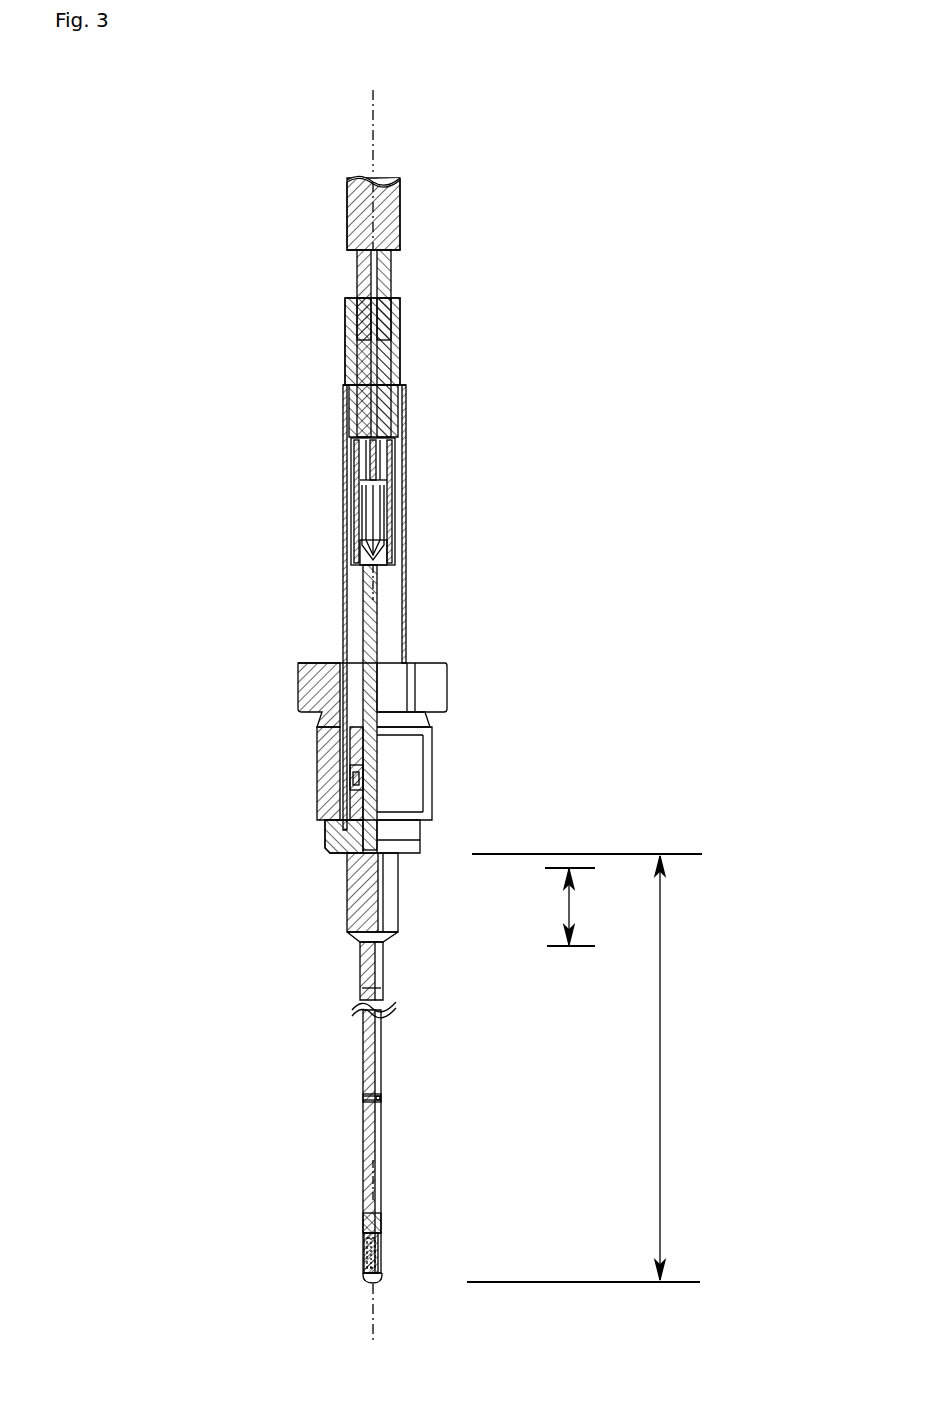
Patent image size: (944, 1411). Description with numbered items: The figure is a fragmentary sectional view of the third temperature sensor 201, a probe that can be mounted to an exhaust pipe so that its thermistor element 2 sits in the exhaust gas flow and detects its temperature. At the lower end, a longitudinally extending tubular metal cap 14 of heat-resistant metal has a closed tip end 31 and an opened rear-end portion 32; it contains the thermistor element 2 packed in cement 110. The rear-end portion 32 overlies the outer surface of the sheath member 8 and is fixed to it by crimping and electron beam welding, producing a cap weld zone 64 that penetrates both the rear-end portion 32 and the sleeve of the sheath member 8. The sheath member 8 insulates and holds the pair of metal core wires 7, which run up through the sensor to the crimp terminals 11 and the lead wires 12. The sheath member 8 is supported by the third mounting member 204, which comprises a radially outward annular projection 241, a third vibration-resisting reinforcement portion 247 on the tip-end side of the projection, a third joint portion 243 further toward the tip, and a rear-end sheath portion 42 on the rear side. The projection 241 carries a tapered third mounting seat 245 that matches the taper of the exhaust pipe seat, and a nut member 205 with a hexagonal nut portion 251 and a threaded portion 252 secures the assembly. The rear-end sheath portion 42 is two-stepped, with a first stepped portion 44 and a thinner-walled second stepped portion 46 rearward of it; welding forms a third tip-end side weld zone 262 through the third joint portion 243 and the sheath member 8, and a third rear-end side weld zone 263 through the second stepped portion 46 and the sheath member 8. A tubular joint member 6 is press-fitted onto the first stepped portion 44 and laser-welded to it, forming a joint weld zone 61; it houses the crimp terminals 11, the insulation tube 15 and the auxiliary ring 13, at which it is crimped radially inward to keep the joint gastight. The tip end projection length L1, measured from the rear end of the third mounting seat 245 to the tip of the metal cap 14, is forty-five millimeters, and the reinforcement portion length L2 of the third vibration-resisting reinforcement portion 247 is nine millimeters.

The third temperature sensor 201 is at (178, 330).
The lead wires 12 is at (357, 267).
The auxiliary ring 13 is at (400, 316).
The joint member 6 is at (345, 578).
The crimp terminals 11 is at (353, 468).
The insulation tube 15 is at (388, 520).
The metal core wires 7 is at (395, 545).
The third rear-end side weld zone 263 is at (360, 780).
The nut member 205 is at (530, 667).
The hexagonal nut portion 251 is at (447, 690).
The threaded portion 252 is at (432, 740).
The joint weld zone 61 is at (432, 820).
The third mounting member 204 is at (218, 750).
The rear-end sheath portion 42 is at (268, 745).
The second stepped portion 46 is at (350, 763).
The first stepped portion 44 is at (355, 786).
The projection 241 is at (325, 840).
The third mounting seat 245 is at (347, 865).
The third vibration-resisting reinforcement portion 247 is at (360, 915).
The third joint portion 243 is at (362, 958).
The third tip-end side weld zone 262 is at (363, 988).
The sheath member 8 is at (363, 1046).
The rear-end portion 32 is at (381, 1097).
The cap weld zone 64 is at (363, 1098).
The metal cap 14 is at (382, 1222).
The cement 110 is at (363, 1256).
The thermistor element 2 is at (365, 1276).
The tip end 31 is at (380, 1283).
The tip end projection length L1 is at (584, 1068).
The reinforcement portion length L2 is at (577, 907).